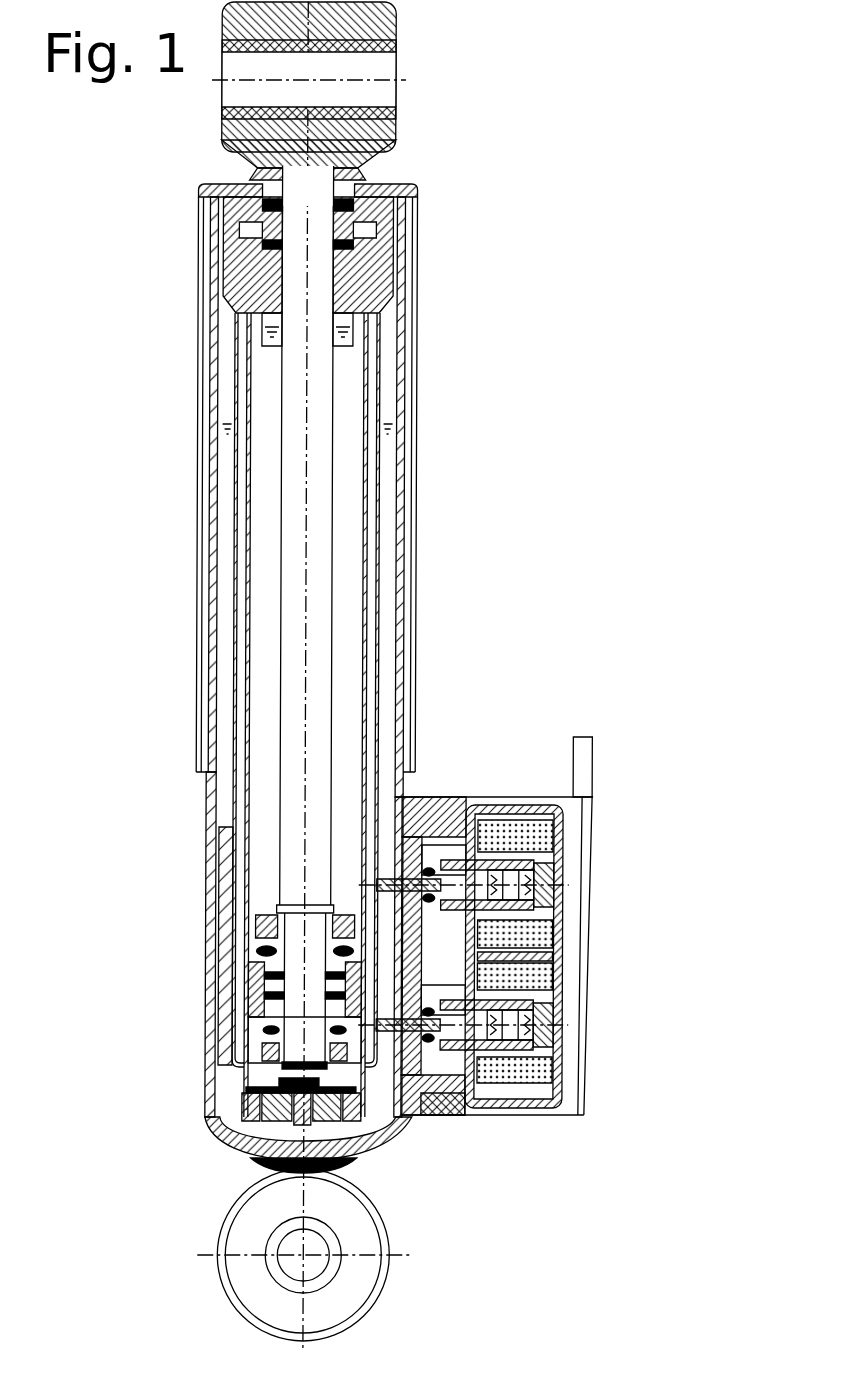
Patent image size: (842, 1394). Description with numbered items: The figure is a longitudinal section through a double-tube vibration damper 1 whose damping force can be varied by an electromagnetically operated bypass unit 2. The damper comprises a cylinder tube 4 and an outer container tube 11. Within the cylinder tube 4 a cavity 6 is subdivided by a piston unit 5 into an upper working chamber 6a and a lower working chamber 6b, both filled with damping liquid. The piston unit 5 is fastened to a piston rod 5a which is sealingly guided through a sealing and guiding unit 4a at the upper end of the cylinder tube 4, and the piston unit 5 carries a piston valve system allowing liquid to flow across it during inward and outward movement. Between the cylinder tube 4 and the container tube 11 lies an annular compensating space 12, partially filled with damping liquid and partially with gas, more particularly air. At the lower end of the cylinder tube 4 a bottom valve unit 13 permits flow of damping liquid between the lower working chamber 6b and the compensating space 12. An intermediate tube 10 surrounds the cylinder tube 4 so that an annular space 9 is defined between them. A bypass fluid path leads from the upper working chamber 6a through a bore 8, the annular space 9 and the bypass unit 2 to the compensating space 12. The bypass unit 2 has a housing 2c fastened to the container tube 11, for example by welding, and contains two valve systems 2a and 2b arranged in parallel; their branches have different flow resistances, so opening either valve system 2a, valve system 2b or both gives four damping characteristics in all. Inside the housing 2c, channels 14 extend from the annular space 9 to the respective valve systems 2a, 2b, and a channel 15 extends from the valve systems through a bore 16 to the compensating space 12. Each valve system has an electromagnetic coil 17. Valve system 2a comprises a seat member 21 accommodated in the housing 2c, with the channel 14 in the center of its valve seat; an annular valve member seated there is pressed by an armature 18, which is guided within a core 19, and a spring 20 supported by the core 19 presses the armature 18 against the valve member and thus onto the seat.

The double-tube vibration damper 1 is at (463, 491).
The bypass unit 2 is at (546, 960).
The valve system 2a is at (522, 1108).
The valve system 2b is at (502, 817).
The housing 2c is at (457, 796).
The cylinder tube 4 is at (381, 546).
The sealing and guiding unit 4a is at (388, 290).
The piston unit 5 is at (257, 978).
The piston rod 5a is at (292, 607).
The cavity 6 is at (268, 541).
The upper working chamber 6a is at (270, 661).
The lower working chamber 6b is at (259, 1073).
The bore 8 is at (254, 363).
The annular space 9 is at (370, 597).
The intermediate tube 10 is at (394, 655).
The container tube 11 is at (402, 346).
The compensating space 12 is at (394, 440).
The bottom valve unit 13 is at (252, 1106).
The channel 14 is at (400, 806).
The channel 15 is at (582, 965).
The bore 16 is at (570, 856).
The electromagnetic coil 17 is at (566, 836).
The armature 18 is at (568, 1061).
The core 19 is at (570, 896).
The spring 20 is at (574, 946).
The seat member 21 is at (500, 1115).